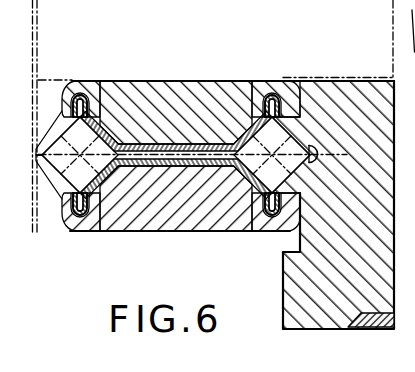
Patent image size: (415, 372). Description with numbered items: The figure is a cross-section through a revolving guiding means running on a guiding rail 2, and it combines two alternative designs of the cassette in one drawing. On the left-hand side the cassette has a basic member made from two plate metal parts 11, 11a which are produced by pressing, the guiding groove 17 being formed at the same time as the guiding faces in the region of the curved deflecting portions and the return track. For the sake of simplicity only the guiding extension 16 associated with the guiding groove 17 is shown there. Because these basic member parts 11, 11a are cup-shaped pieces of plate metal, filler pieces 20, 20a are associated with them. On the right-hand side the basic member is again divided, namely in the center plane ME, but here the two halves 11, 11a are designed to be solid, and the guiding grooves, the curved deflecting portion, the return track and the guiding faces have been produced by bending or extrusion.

The guiding rail 2 is at (327, 254).
The center plane ME is at (316, 179).
The basic member part 11 is at (109, 91).
The basic member part 11a is at (80, 232).
The guiding extension 16 is at (72, 86).
The guiding groove 17 is at (82, 102).
The filler piece 20 is at (165, 97).
The filler piece 20a is at (150, 194).